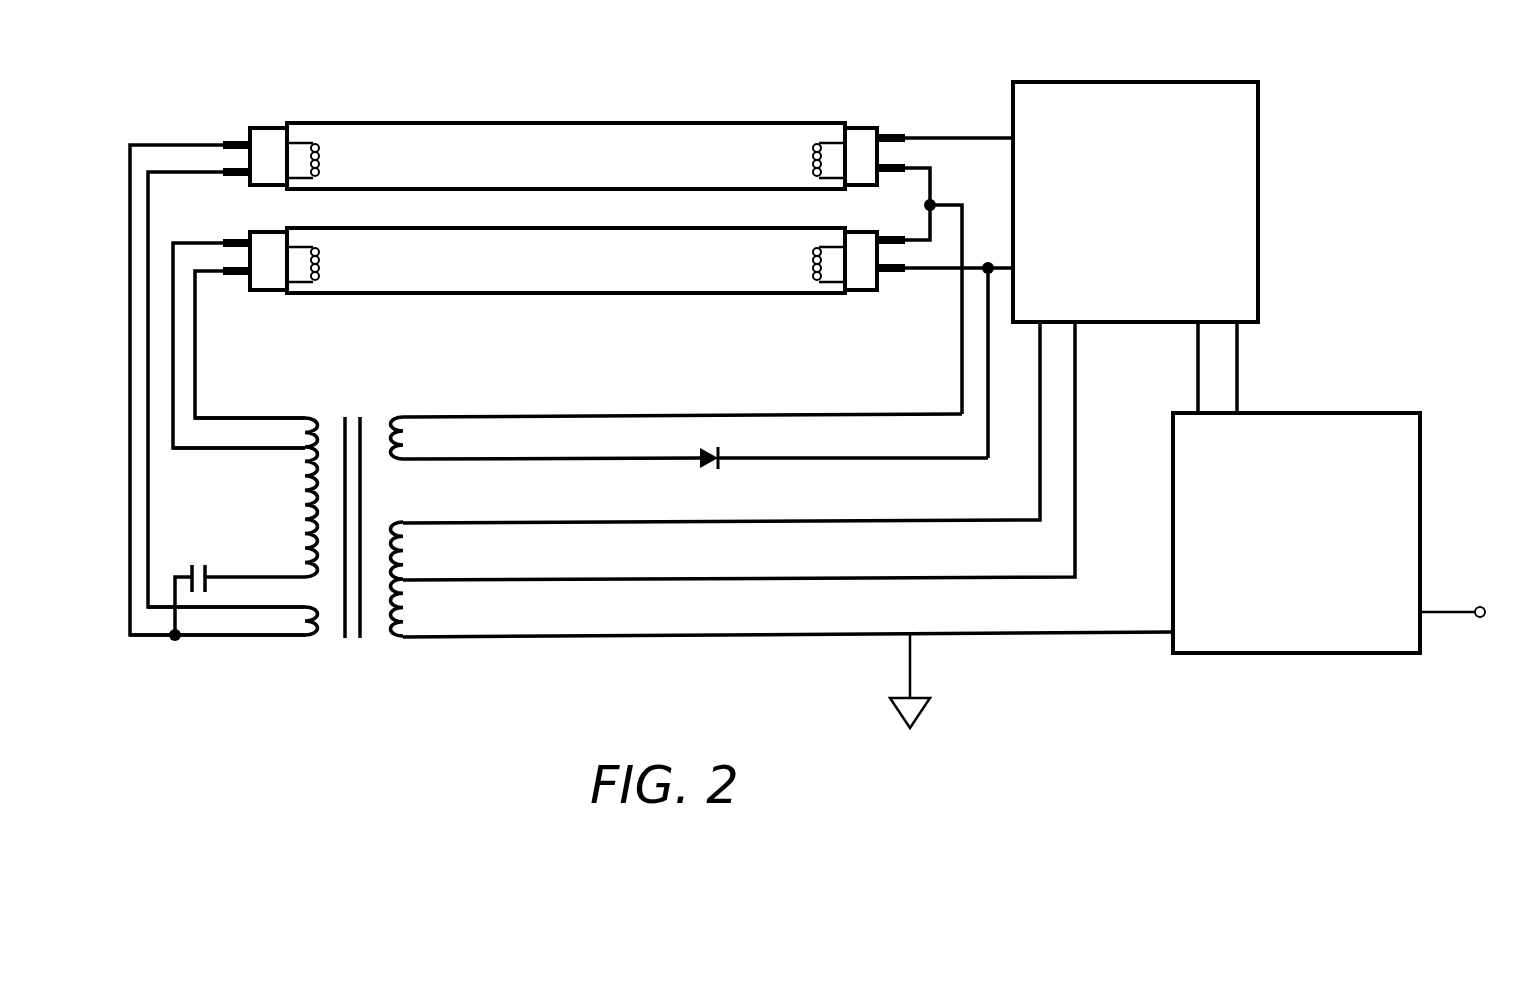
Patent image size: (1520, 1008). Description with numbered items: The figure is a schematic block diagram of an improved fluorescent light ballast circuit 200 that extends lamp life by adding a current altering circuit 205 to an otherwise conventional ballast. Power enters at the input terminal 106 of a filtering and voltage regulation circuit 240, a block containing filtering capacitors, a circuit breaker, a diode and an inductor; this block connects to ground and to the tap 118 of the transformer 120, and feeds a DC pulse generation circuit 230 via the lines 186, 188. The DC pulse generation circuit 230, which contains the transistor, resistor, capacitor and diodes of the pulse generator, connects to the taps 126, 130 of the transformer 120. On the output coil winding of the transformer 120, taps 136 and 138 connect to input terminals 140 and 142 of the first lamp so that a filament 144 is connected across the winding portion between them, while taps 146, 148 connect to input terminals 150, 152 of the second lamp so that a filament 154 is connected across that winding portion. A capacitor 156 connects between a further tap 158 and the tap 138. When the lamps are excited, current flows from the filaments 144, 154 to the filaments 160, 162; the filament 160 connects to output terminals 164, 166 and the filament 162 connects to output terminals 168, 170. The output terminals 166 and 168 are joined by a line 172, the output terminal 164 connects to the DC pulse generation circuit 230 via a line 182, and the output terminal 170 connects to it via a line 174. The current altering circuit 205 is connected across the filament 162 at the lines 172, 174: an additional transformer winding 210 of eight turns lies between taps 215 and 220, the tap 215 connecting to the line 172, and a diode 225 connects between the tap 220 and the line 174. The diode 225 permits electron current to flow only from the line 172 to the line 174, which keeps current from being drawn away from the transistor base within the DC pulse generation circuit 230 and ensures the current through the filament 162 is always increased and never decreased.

The input terminal 106 is at (1481, 606).
The tap 118 is at (433, 637).
The transformer 120 is at (352, 652).
The tap 126 is at (437, 580).
The tap 130 is at (435, 524).
The tap 136 is at (310, 606).
The tap 138 is at (285, 635).
The input terminal 140 is at (238, 140).
The input terminal 142 is at (238, 176).
The filament 144 is at (325, 155).
The tap 146 is at (258, 417).
The tap 148 is at (270, 449).
The input terminal 150 is at (238, 243).
The input terminal 152 is at (237, 278).
The filament 154 is at (325, 258).
The capacitor 156 is at (191, 565).
The tap 158 is at (300, 576).
The filament 160 is at (808, 150).
The filament 162 is at (810, 258).
The output terminal 164 is at (900, 133).
The output terminal 166 is at (905, 163).
The output terminal 168 is at (900, 236).
The output terminal 170 is at (897, 271).
The line 172 is at (933, 181).
The line 174 is at (935, 280).
The line 182 is at (960, 134).
The line 186 is at (1197, 357).
The line 188 is at (1238, 356).
The improved fluorescent light ballast circuit 200 is at (1352, 86).
The current altering circuit 205 is at (614, 391).
The transformer winding 210 is at (375, 417).
The tap 215 is at (448, 417).
The tap 220 is at (447, 462).
The diode 225 is at (708, 447).
The DC pulse generation circuit 230 is at (1150, 81).
The filtering and voltage regulation circuit 240 is at (1338, 413).